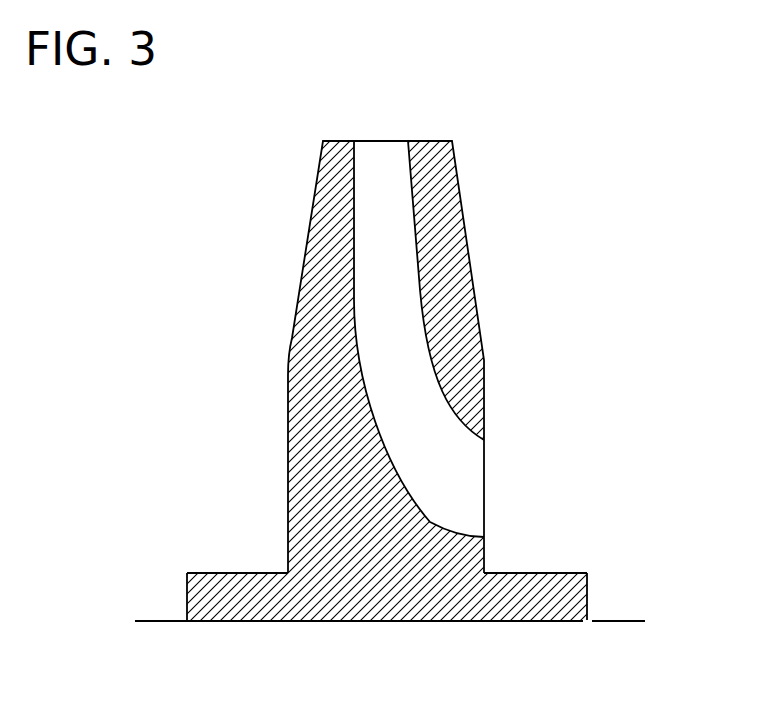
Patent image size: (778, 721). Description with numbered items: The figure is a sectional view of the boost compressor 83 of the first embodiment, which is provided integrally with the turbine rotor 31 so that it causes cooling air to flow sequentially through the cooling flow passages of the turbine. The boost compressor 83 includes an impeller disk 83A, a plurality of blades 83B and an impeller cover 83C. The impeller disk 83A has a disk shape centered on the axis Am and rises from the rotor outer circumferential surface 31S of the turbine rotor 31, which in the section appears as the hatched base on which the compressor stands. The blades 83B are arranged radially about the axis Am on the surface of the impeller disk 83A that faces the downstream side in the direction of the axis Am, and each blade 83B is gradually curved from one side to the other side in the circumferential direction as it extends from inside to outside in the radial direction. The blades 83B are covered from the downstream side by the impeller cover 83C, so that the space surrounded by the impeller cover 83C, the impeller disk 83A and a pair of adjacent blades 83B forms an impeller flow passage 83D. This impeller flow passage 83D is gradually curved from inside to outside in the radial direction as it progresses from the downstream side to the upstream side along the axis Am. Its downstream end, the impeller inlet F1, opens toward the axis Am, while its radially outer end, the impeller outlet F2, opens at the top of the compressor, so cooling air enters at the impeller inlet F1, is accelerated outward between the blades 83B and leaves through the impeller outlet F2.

The boost compressor 83 is at (590, 167).
The impeller disk 83A is at (320, 382).
The blade 83B is at (295, 339).
The impeller flow passage 83D is at (384, 258).
The impeller cover 83C is at (460, 280).
The turbine rotor 31 is at (228, 602).
The rotor outer circumferential surface 31S is at (248, 573).
The impeller inlet F1 is at (484, 535).
The impeller outlet F2 is at (357, 141).
The axis Am is at (603, 620).